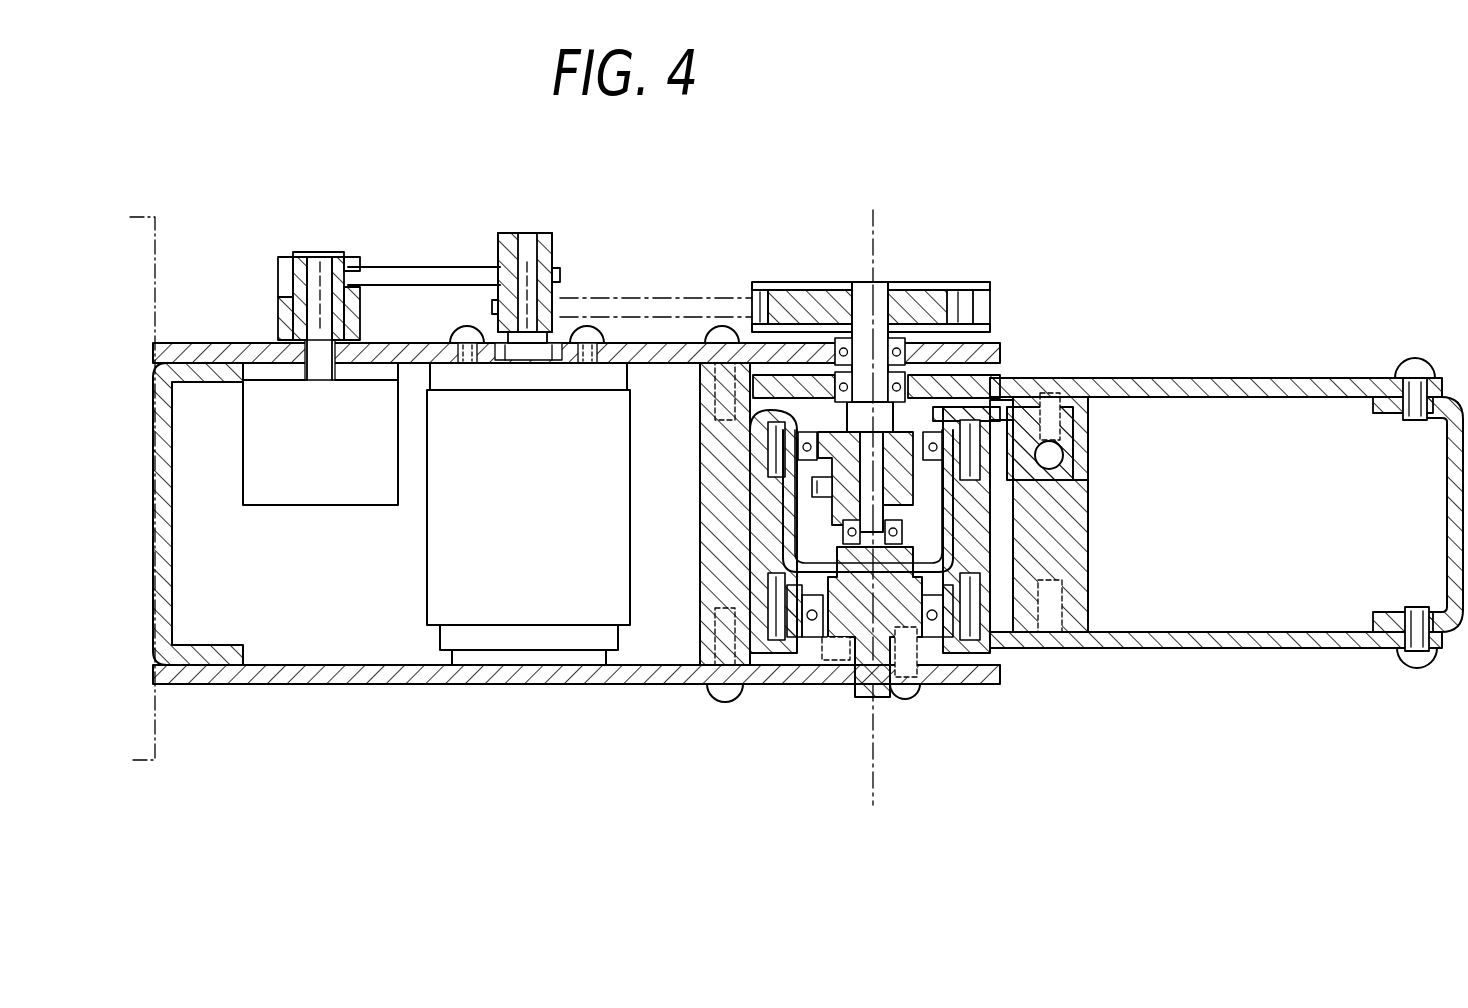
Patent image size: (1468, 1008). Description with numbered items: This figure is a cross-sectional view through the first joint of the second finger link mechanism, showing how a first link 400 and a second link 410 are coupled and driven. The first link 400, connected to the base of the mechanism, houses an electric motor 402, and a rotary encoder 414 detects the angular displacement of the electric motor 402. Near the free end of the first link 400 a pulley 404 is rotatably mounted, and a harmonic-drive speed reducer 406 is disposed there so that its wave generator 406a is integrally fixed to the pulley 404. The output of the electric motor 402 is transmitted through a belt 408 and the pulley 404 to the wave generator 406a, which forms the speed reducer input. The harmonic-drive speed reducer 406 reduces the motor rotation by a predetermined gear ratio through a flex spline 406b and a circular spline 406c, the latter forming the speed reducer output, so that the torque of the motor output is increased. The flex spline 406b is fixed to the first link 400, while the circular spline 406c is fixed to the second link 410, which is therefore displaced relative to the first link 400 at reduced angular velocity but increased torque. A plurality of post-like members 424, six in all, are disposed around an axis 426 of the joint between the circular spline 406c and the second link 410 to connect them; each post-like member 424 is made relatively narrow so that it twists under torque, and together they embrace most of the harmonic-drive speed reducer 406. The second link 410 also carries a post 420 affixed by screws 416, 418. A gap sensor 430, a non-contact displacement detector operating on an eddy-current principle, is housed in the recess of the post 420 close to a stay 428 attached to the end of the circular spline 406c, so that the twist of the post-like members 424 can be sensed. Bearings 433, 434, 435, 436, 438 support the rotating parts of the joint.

The first link 400 is at (369, 708).
The electric motor 402 is at (430, 565).
The pulley 404 is at (930, 282).
The harmonic-drive speed reducer 406 is at (787, 685).
The wave generator 406a is at (1083, 497).
The flex spline 406b is at (957, 665).
The circular spline 406c is at (1010, 397).
The belt 408 is at (652, 297).
The second link 410 is at (1150, 665).
The rotary encoder 414 is at (262, 505).
The screw 416 is at (1052, 395).
The screw 418 is at (1058, 640).
The post 420 is at (1060, 458).
The post-like member 424 is at (1088, 572).
The axis 426 is at (868, 216).
The stay 428 is at (1033, 400).
The gap sensor 430 is at (1100, 452).
The bearing 433 is at (839, 585).
The bearing 434 is at (985, 512).
The bearing 435 is at (1090, 412).
The bearing 436 is at (905, 375).
The bearing 438 is at (847, 283).